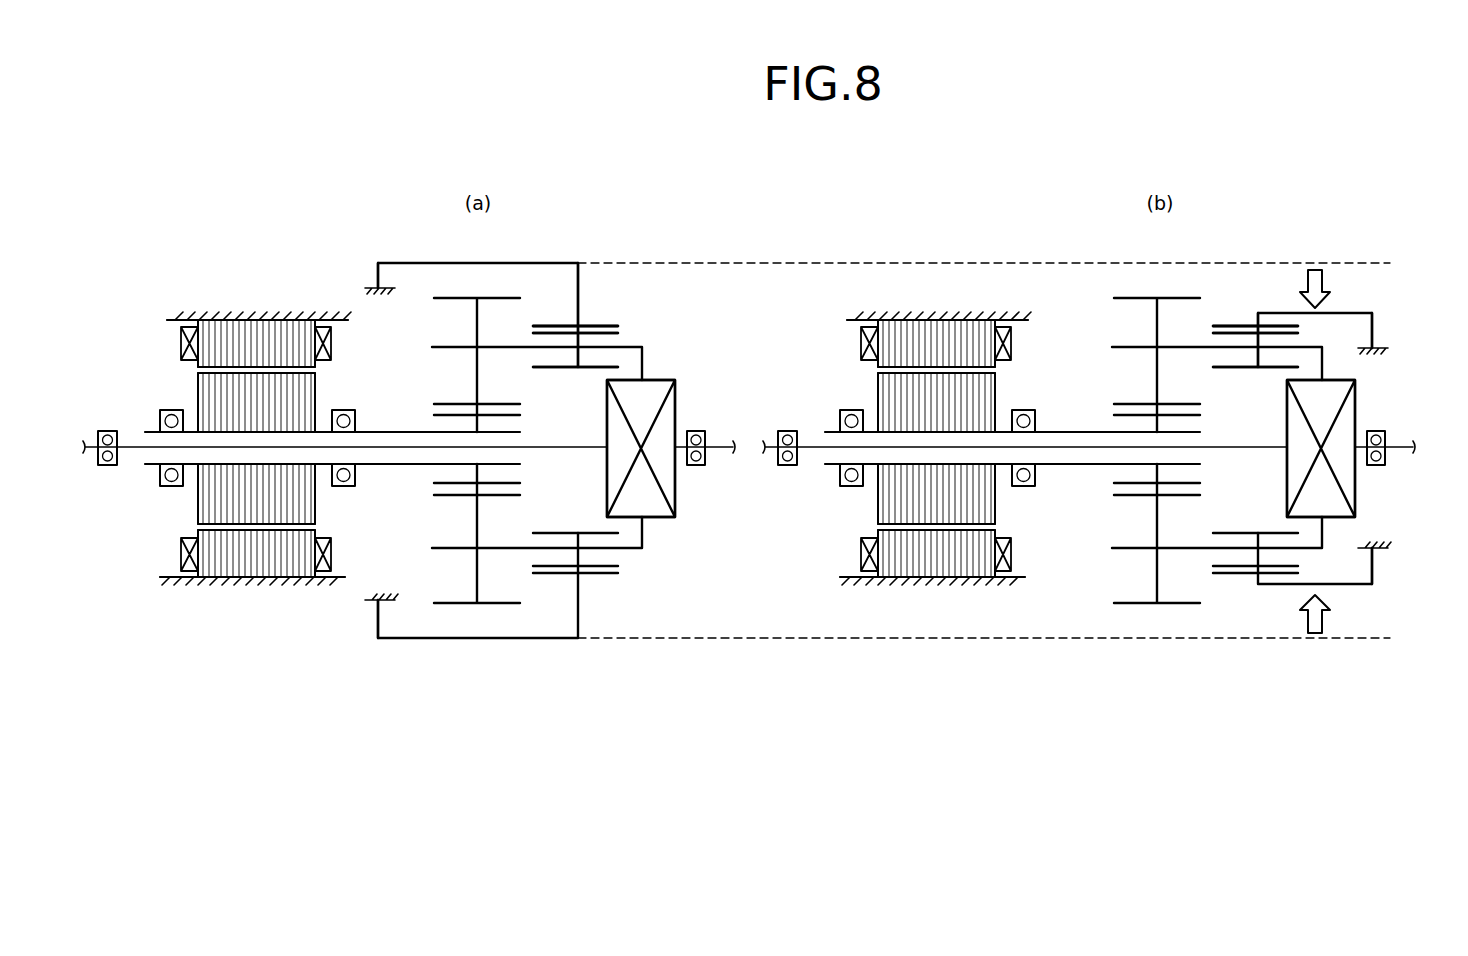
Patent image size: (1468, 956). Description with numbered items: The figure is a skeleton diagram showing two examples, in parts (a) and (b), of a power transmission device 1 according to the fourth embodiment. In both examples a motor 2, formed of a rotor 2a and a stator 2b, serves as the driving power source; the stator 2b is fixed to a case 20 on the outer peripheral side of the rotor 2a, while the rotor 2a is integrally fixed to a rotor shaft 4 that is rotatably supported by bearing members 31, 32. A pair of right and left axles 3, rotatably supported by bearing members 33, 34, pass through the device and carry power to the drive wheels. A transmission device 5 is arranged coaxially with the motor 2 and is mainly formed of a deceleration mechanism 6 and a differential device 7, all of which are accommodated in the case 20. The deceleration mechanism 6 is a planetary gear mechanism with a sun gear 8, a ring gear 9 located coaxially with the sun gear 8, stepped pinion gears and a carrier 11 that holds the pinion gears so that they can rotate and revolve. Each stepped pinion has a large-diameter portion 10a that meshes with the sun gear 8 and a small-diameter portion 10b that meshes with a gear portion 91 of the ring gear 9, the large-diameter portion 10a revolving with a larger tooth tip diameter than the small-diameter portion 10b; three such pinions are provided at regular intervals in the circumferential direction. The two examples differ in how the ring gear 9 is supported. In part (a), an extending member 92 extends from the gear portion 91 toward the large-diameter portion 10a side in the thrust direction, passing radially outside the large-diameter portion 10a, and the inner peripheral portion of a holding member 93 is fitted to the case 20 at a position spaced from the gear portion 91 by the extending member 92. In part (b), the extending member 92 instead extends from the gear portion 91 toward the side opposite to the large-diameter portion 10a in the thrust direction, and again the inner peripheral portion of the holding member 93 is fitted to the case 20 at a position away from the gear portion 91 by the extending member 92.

The power transmission device 1 is at (222, 290).
The motor 2 is at (113, 320).
The rotor 2a is at (198, 380).
The stator 2b is at (197, 326).
The axles 3 is at (126, 449).
The rotor shaft 4 is at (379, 431).
The transmission device 5 is at (653, 290).
The deceleration mechanism 6 is at (629, 335).
The differential device 7 is at (670, 378).
The sun gear 8 is at (447, 416).
The ring gear 9 is at (601, 290).
The large-diameter portion 10a is at (458, 299).
The small-diameter portion 10b is at (556, 368).
The carrier 11 is at (643, 348).
The case 20 is at (281, 318).
The bearing member 31 is at (172, 487).
The bearing member 32 is at (345, 487).
The bearing member 33 is at (108, 431).
The bearing member 34 is at (696, 431).
The gear portion 91 is at (601, 327).
The extending member 92 is at (520, 263).
The holding member 93 is at (378, 271).